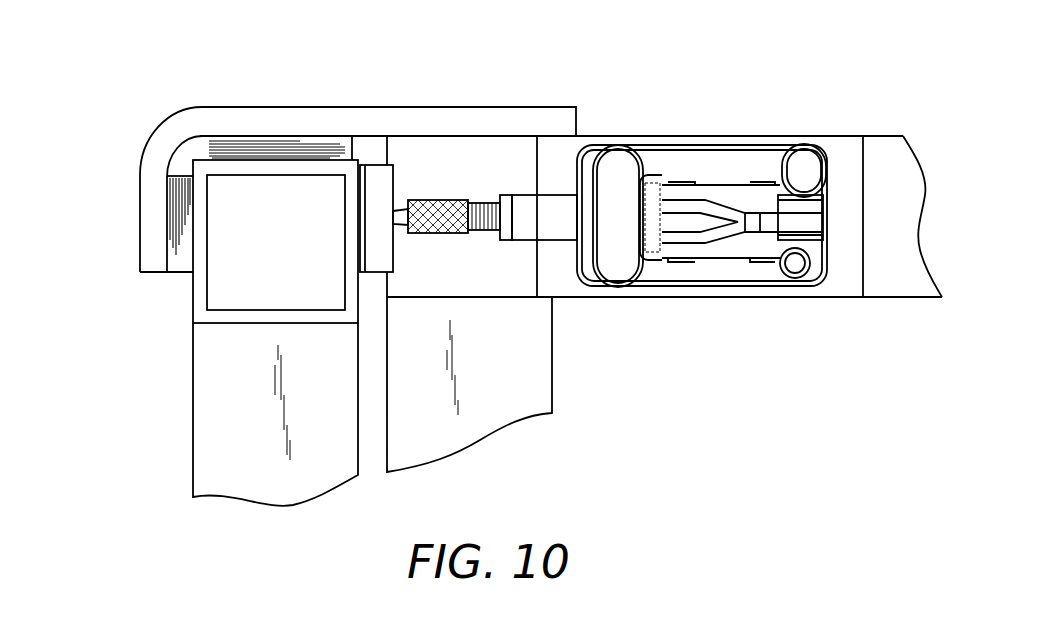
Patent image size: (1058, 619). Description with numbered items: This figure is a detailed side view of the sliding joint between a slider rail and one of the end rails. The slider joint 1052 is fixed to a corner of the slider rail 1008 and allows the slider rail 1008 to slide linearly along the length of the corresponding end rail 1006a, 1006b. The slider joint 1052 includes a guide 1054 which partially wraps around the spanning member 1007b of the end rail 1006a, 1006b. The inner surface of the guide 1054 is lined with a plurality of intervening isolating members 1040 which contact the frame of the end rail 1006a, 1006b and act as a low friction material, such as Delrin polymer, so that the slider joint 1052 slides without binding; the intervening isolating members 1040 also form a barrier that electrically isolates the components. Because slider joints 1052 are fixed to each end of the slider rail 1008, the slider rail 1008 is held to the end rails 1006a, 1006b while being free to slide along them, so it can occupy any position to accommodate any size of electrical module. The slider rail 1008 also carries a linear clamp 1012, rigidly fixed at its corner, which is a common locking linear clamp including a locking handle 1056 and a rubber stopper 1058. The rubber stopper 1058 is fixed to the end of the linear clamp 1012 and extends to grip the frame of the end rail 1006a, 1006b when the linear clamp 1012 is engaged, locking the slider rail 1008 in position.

The slider joint 1052 is at (135, 103).
The guide 1054 is at (208, 108).
The spanning member 1007b is at (310, 173).
The rubber stopper 1058 is at (378, 183).
The intervening isolating members 1040 is at (167, 268).
The locking handle 1056 is at (617, 265).
The linear clamp 1012 is at (690, 263).
The slider rail 1008 is at (552, 355).
The end rail 1006a is at (206, 448).
The end rail 1006b is at (180, 455).